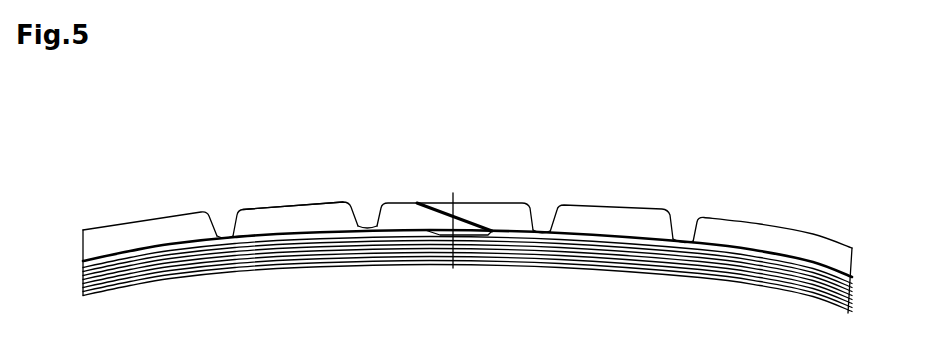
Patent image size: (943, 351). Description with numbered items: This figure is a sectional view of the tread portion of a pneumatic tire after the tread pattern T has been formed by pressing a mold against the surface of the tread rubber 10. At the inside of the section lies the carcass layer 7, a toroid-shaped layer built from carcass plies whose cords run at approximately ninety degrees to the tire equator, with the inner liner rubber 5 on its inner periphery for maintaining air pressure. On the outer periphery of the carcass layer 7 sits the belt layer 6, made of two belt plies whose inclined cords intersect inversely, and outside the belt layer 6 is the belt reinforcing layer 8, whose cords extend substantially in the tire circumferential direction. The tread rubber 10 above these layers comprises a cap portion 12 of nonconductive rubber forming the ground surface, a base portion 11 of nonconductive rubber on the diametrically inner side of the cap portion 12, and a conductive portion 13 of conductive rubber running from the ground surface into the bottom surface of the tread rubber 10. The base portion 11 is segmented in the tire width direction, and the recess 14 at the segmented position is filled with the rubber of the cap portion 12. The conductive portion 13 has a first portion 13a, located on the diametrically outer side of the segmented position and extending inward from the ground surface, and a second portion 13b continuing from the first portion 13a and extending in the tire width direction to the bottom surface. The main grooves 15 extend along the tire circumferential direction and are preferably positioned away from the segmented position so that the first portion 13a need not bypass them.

The tread pattern T is at (168, 137).
The inner liner rubber 5 is at (310, 264).
The belt layer 6 is at (157, 263).
The carcass layer 7 is at (647, 271).
The belt reinforcing layer 8 is at (158, 246).
The tread rubber 10 is at (503, 205).
The base portion 11 is at (270, 240).
The cap portion 12 is at (307, 212).
The conductive portion 13 is at (813, 261).
The first portion 13a is at (447, 205).
The second portion 13b is at (607, 237).
The recess 14 is at (470, 232).
The main groove 15 is at (233, 228).